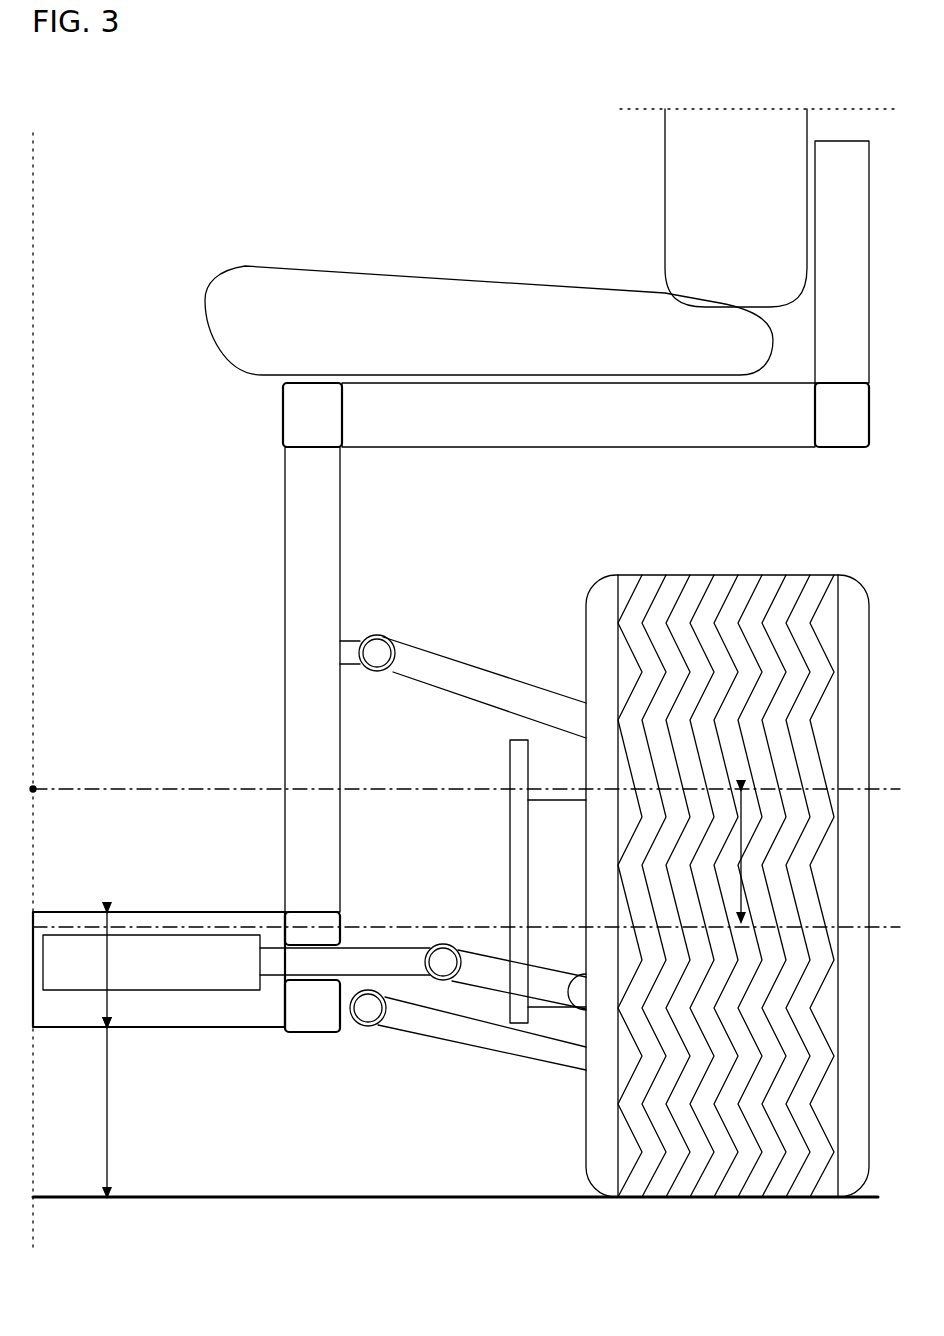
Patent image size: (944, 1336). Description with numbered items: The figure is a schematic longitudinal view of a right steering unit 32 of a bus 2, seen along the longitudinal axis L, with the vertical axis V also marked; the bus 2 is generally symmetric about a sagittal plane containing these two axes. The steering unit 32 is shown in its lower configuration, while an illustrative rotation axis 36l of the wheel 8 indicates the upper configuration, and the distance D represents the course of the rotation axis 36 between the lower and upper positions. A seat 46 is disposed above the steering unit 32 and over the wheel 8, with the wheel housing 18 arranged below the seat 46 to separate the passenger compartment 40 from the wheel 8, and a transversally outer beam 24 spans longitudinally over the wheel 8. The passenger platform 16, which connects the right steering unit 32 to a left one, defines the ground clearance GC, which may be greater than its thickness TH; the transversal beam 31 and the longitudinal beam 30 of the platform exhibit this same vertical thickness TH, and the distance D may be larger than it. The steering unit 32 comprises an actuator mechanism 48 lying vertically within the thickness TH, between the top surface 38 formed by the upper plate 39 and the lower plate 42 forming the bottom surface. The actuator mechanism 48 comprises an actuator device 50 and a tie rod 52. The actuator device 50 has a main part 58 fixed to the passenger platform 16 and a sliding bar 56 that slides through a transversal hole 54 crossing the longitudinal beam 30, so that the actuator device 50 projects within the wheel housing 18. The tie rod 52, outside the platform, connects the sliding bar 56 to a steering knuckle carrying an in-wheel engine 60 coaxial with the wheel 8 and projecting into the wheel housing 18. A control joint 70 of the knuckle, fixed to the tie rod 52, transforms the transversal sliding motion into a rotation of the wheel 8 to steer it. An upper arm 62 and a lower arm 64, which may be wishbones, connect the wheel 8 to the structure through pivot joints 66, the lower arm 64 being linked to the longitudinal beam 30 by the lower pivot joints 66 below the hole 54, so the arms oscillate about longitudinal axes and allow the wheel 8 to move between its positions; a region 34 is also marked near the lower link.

The bus 2 is at (494, 123).
The wheel 8 is at (758, 1018).
The passenger platform 16 is at (62, 1040).
The wheel housing 18 is at (562, 525).
The transversally outer beam 24 is at (859, 428).
The longitudinal beam 30 is at (331, 1025).
The transversal beam 31 is at (222, 1025).
The steering unit 32 is at (571, 665).
The lower link region 34 is at (495, 875).
The rotation axis 36 is at (420, 945).
The illustrative rotation axis 36l is at (405, 787).
The top surface 38 is at (80, 912).
The upper plate 39 is at (152, 912).
The passenger compartment 40 is at (134, 180).
The lower plate 42 is at (232, 1030).
The seat 46 is at (405, 186).
The actuator mechanism 48 is at (354, 1124).
The actuator device 50 is at (205, 852).
The tie rod 52 is at (500, 990).
The hole 54 is at (350, 928).
The sliding bar 56 is at (275, 958).
The main part 58 is at (200, 980).
The in-wheel engine 60 is at (573, 875).
The upper arm 62 is at (447, 668).
The lower arm 64 is at (432, 1023).
The pivot joint 66 is at (377, 648).
The control joint 70 is at (585, 1010).
The vertical axis V is at (33, 348).
The longitudinal axis L is at (35, 787).
The thickness TH is at (131, 969).
The ground clearance GC is at (133, 1112).
The distance D is at (758, 856).